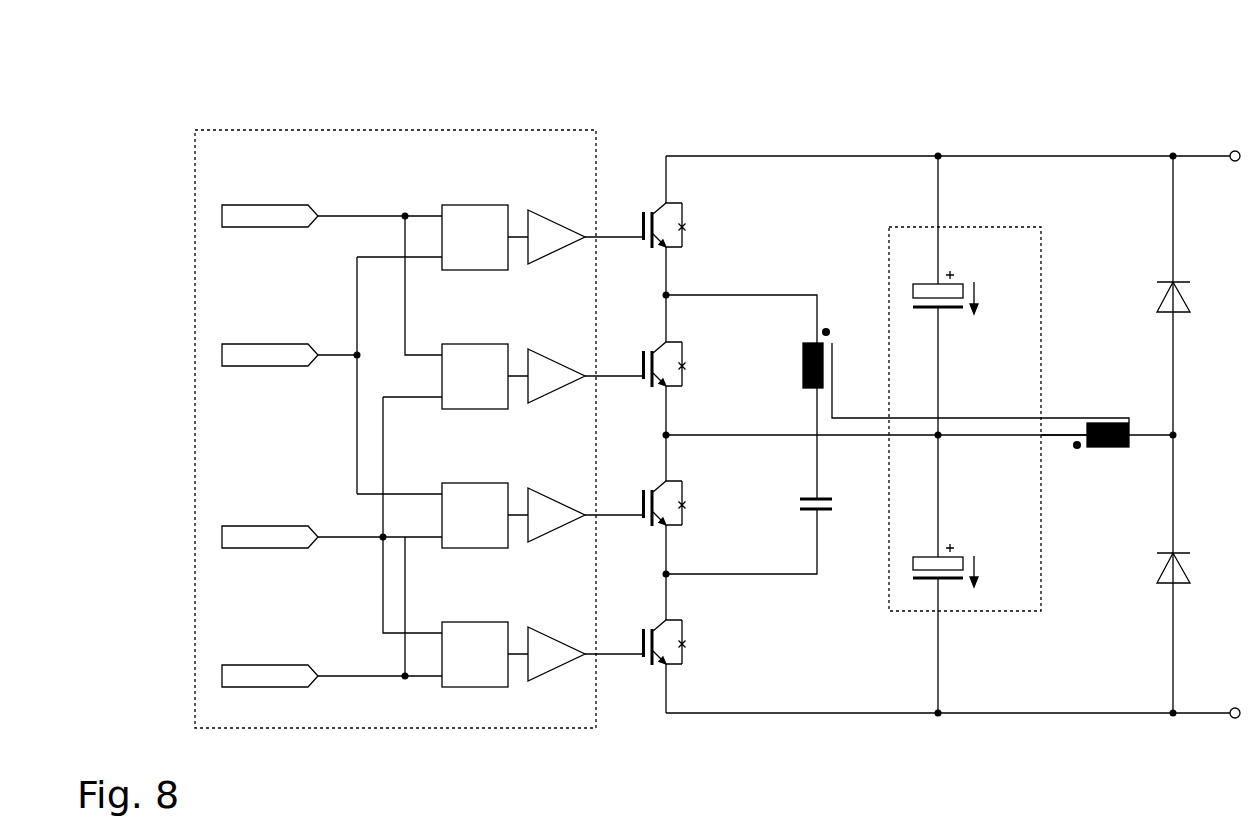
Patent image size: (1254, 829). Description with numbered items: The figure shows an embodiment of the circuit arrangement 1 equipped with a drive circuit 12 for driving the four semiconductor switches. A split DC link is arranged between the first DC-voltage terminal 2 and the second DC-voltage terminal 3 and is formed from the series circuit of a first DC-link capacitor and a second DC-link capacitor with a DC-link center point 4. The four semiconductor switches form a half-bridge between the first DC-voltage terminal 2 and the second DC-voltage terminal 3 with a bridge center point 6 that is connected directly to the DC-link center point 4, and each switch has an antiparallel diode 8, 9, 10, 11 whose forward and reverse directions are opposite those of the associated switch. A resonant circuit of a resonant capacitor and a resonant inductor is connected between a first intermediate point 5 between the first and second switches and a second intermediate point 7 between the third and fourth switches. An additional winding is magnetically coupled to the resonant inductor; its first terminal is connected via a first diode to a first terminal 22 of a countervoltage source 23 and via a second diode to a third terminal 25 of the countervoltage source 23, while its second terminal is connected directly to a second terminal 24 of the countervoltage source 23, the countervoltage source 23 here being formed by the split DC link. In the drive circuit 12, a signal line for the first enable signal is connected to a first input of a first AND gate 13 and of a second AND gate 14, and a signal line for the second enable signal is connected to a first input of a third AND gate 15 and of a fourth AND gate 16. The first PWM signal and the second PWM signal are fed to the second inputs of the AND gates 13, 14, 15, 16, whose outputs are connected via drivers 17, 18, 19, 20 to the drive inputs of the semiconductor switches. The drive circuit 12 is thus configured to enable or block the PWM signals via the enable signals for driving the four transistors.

The circuit arrangement 1 is at (731, 70).
The first DC-voltage terminal 2 is at (942, 150).
The second DC-voltage terminal 3 is at (940, 720).
The DC-link center point 4 is at (934, 439).
The first intermediate point 5 is at (660, 294).
The bridge center point 6 is at (672, 431).
The second intermediate point 7 is at (660, 573).
The antiparallel diode 8 is at (689, 228).
The antiparallel diode 9 is at (689, 367).
The antiparallel diode 10 is at (689, 505).
The antiparallel diode 11 is at (689, 645).
The drive circuit 12 is at (402, 128).
The first AND gate 13 is at (476, 204).
The second AND gate 14 is at (476, 343).
The third AND gate 15 is at (476, 482).
The fourth AND gate 16 is at (476, 621).
The driver 17 is at (549, 215).
The driver 18 is at (549, 355).
The driver 19 is at (549, 494).
The driver 20 is at (549, 633).
The first terminal of the countervoltage source 22 is at (942, 212).
The countervoltage source 23 is at (1042, 256).
The second terminal of the countervoltage source 24 is at (1046, 446).
The third terminal of the countervoltage source 25 is at (942, 630).